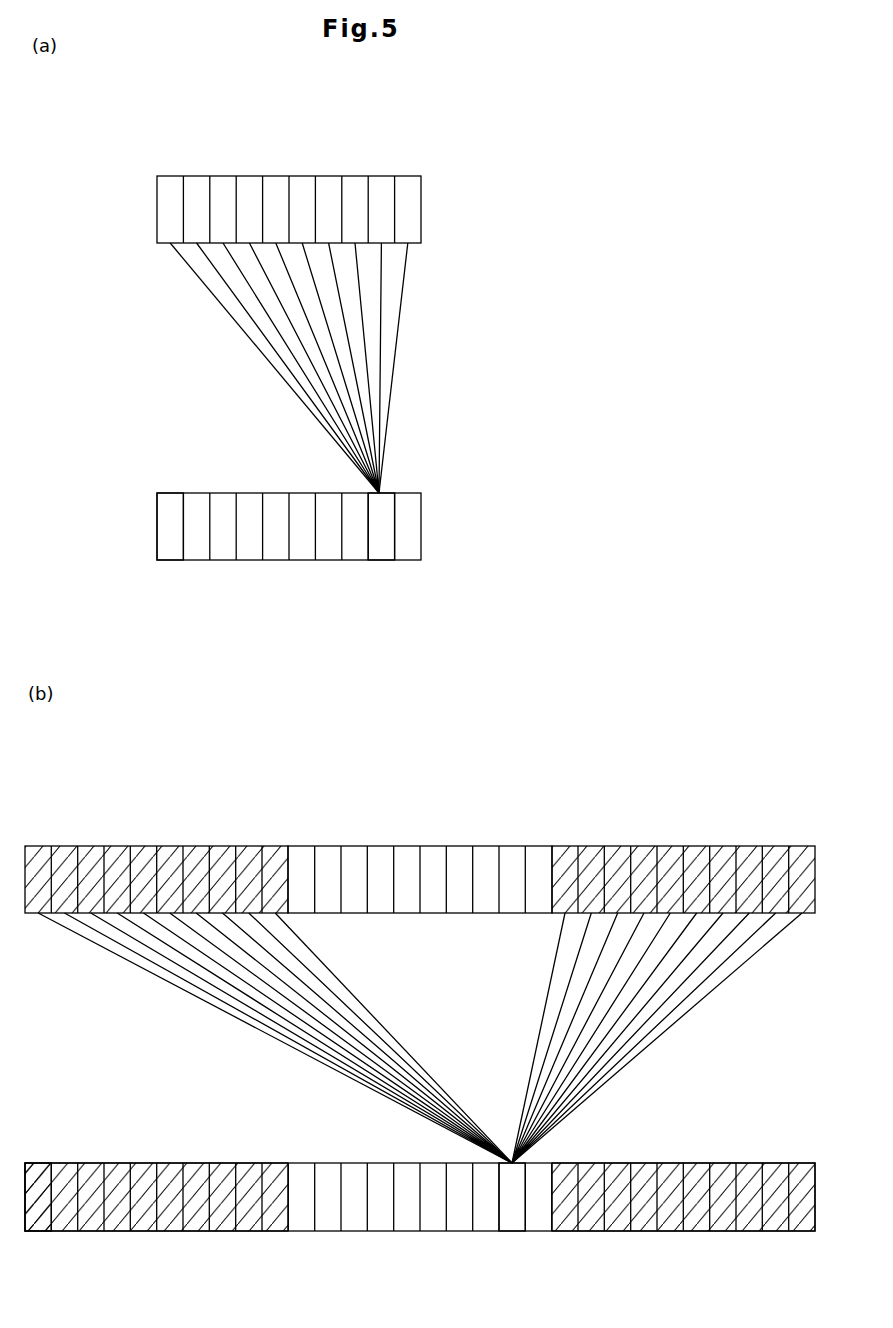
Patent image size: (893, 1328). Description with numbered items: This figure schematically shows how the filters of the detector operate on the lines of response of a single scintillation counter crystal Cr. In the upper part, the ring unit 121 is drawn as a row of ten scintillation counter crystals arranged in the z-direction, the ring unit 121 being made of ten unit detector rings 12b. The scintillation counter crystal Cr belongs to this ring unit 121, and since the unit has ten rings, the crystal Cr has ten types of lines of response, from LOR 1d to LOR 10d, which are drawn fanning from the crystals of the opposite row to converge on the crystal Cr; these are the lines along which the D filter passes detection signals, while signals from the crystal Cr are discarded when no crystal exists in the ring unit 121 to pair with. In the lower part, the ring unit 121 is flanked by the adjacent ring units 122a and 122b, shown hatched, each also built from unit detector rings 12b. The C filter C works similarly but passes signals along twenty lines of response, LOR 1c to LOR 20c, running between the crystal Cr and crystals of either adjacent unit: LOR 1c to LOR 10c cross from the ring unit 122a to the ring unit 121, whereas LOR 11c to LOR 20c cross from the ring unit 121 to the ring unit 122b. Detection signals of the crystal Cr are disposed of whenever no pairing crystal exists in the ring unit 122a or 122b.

The ring unit 121 is at (421, 168).
The ring unit 122a is at (288, 840).
The ring unit 122b is at (815, 840).
The LOR 1d is at (224, 308).
The LOR 10d is at (397, 320).
The LOR 1c is at (139, 968).
The LOR 10c is at (342, 985).
The LOR 11c is at (545, 1005).
The LOR 20c is at (750, 960).
The unit detector ring 12b is at (183, 563).
The C filter C is at (163, 492).
The scintillation counter crystal Cr is at (385, 562).